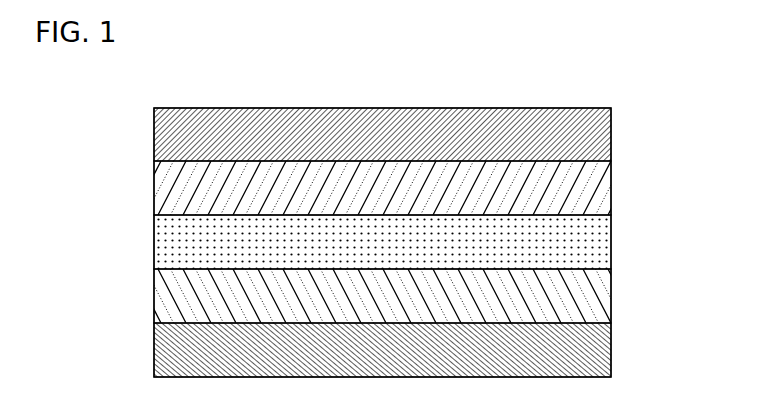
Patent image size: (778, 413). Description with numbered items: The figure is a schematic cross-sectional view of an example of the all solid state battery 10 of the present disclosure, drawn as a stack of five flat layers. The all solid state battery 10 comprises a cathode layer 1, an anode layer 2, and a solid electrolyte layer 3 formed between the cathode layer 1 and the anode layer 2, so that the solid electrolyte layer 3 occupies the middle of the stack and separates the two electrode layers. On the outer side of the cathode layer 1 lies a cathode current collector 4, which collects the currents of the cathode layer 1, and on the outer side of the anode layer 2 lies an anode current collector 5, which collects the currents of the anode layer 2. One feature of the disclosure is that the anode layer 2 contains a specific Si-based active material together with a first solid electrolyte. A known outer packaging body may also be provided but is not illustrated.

The all solid state battery 10 is at (583, 96).
The cathode current collector 4 is at (612, 130).
The cathode layer 1 is at (612, 185).
The solid electrolyte layer 3 is at (608, 238).
The anode layer 2 is at (612, 292).
The anode current collector 5 is at (612, 345).